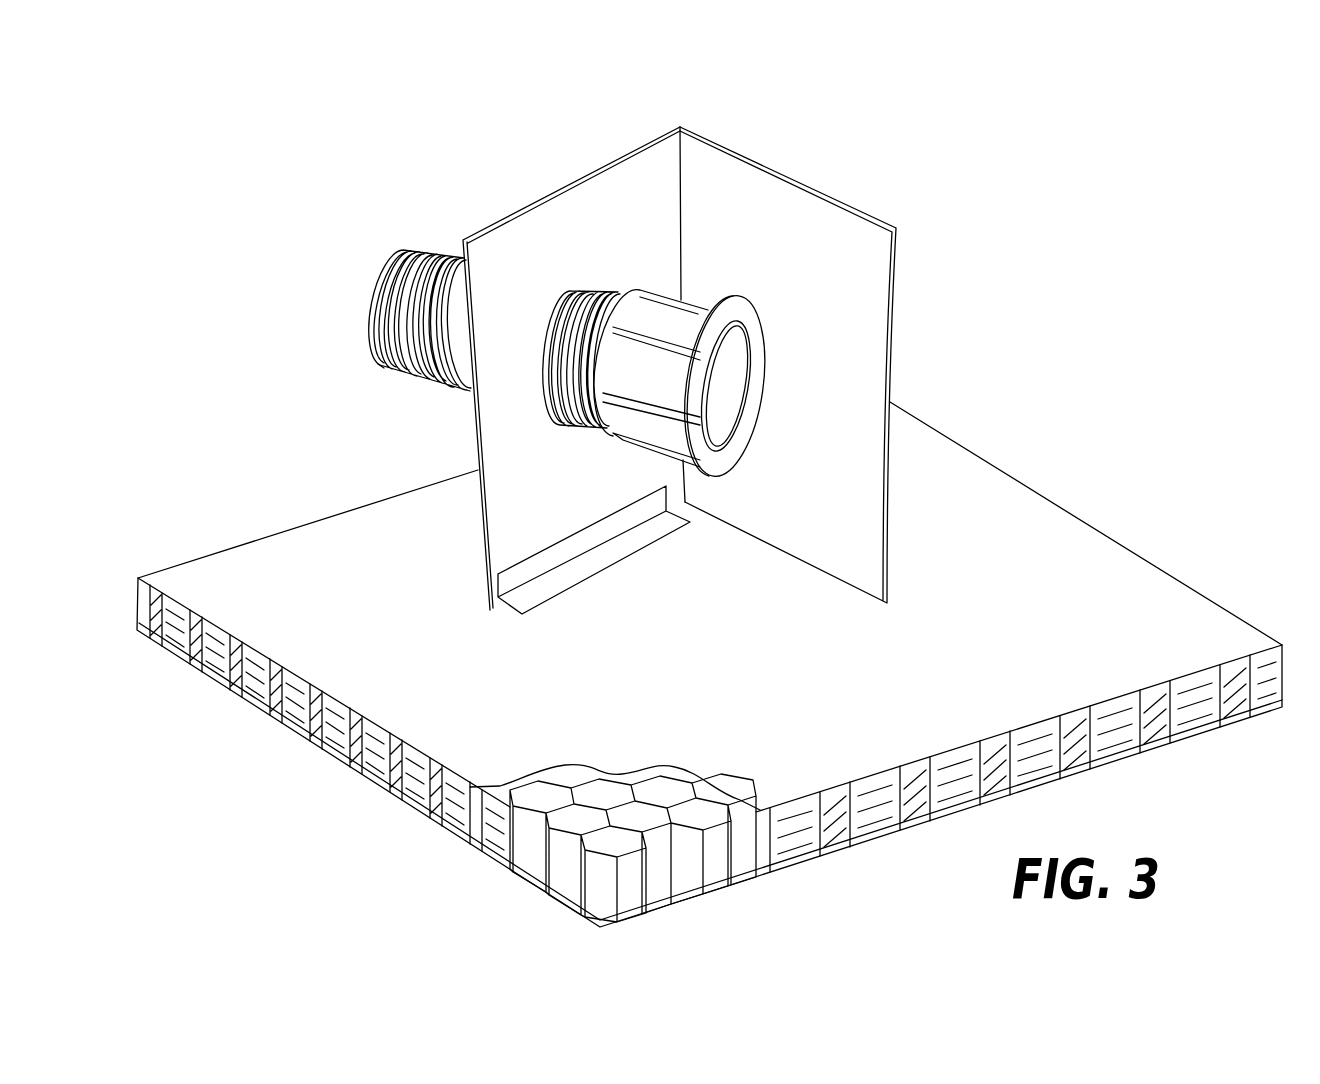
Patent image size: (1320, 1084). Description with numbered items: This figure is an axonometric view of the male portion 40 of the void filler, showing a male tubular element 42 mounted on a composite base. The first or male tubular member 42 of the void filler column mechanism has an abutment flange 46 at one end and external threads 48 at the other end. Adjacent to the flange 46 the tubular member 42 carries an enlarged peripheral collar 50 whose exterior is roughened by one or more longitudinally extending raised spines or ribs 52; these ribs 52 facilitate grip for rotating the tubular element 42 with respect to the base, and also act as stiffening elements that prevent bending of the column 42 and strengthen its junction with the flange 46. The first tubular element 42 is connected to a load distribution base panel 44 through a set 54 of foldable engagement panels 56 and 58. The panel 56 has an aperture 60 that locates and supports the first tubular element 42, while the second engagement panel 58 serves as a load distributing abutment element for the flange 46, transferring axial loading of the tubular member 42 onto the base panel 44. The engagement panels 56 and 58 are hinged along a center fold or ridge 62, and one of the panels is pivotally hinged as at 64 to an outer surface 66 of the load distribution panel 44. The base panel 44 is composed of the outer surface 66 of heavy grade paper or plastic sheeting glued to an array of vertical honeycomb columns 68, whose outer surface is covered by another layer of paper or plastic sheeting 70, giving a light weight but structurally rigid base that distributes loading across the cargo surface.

The male portion 40 is at (978, 383).
The male tubular element 42 is at (380, 362).
The load distribution base panel 44 is at (1098, 569).
The abutment flange 46 is at (743, 304).
The external threads 48 is at (440, 247).
The enlarged peripheral collar 50 is at (690, 322).
The raised spines or ribs 52 is at (655, 452).
The set of foldable engagement panels 54 is at (497, 378).
The first engagement panel 56 is at (522, 531).
The second engagement panel 58 is at (809, 531).
The aperture 60 is at (563, 322).
The center fold or ridge 62 is at (676, 127).
The pivotal hinge 64 is at (486, 608).
The outer surface 66 is at (670, 659).
The honeycomb columns 68 is at (550, 872).
The paper or plastic sheeting layer 70 is at (1226, 726).